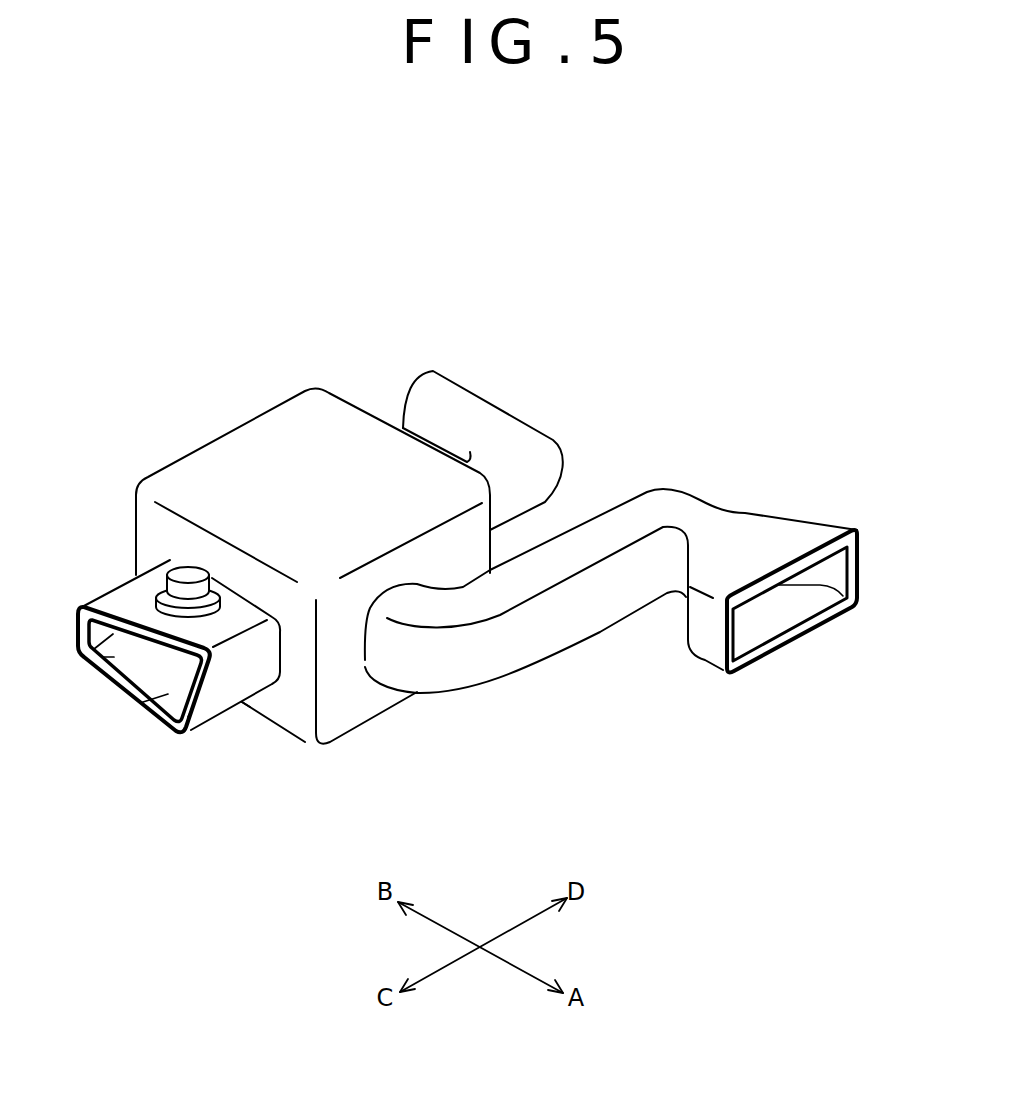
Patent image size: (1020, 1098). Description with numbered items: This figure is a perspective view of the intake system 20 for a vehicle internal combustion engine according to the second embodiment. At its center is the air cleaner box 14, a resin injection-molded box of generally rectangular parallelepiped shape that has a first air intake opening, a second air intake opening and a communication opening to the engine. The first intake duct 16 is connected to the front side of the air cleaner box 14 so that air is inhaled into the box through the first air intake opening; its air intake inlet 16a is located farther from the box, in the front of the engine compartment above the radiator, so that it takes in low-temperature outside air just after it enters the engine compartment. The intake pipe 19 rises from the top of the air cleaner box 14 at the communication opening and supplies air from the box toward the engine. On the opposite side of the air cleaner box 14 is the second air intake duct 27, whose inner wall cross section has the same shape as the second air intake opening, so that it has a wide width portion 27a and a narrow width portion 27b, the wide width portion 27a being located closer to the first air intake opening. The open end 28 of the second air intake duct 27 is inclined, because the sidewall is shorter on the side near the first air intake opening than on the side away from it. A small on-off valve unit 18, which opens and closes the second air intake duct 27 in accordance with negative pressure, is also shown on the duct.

The air cleaner box 14 is at (260, 452).
The first intake duct 16 is at (533, 645).
The air intake inlet 16a is at (783, 615).
The on-off valve unit 18 is at (178, 562).
The intake pipe 19 is at (457, 393).
The intake system 20 is at (320, 358).
The second air intake duct 27 is at (118, 598).
The wide width portion 27a is at (140, 706).
The narrow width portion 27b is at (96, 648).
The open end 28 is at (197, 727).